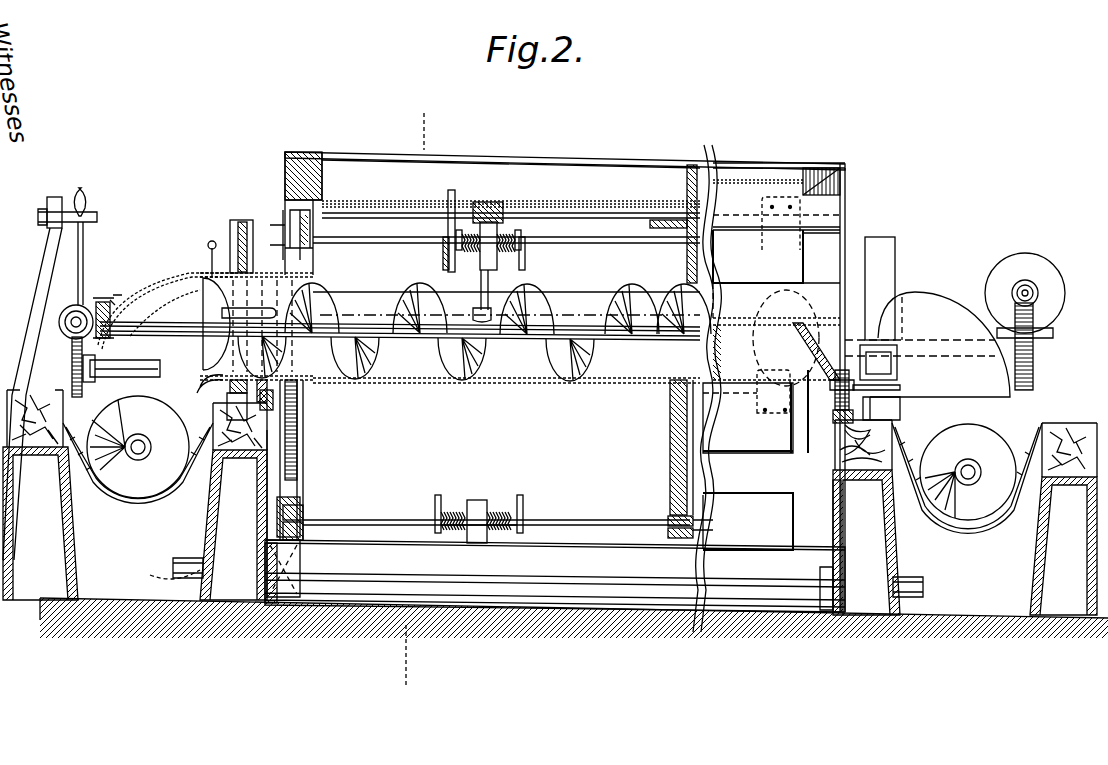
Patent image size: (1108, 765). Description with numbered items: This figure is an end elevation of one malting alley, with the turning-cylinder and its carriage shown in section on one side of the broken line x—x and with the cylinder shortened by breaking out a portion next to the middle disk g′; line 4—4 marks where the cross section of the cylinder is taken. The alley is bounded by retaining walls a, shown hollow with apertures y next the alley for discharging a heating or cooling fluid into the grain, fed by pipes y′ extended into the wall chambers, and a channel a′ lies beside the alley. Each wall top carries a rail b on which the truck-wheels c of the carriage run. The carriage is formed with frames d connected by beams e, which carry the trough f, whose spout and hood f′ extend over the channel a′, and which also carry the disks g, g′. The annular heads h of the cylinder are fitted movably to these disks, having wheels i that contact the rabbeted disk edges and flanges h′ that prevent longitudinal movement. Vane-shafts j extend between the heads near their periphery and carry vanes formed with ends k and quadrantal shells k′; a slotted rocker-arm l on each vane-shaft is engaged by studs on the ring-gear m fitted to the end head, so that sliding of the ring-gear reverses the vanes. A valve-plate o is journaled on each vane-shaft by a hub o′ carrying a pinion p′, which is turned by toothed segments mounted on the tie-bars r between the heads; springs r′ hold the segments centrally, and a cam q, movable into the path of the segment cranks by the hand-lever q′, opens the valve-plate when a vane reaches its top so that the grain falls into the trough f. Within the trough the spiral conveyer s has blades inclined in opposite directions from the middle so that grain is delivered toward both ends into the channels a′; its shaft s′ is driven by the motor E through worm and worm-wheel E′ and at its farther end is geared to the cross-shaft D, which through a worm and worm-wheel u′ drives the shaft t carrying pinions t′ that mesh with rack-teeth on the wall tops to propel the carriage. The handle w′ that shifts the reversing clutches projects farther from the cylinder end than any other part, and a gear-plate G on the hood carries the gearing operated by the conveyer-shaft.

The vane head k is at (317, 170).
The quadrantal shell k′ is at (572, 160).
The broken line x— x is at (706, 160).
The section line 4— 4 is at (413, 398).
The valve-plate o is at (374, 202).
The hub o′ is at (508, 196).
The vane-shaft j is at (600, 212).
The tie-bar r is at (358, 244).
The spring r′ is at (466, 505).
The pinion p′ is at (527, 240).
The cam q is at (480, 272).
The hand-lever q′ is at (207, 248).
The beam e is at (579, 276).
The trough f is at (520, 384).
The spout and hood f′ is at (162, 272).
The conveyer s is at (632, 294).
The conveyer-shaft s′ is at (168, 322).
The disk g is at (300, 462).
The middle disk g′ is at (760, 285).
The wheel i is at (305, 512).
The annular head h is at (318, 532).
The flange h′ is at (695, 520).
The ring-gear m is at (283, 484).
The slotted rocker-arm l is at (283, 250).
The retaining wall a is at (75, 520).
The channel a′ is at (141, 506).
The aperture y is at (253, 572).
The pipe y′ is at (173, 569).
The handle w′ is at (84, 247).
The cross-shaft D is at (59, 323).
The gear-plate G is at (108, 302).
The worm-wheel u′ is at (72, 360).
The pinion shaft t is at (838, 424).
The pinion t′ is at (857, 446).
The carriage frame d is at (240, 220).
The truck-wheel c is at (215, 386).
The rail b is at (888, 410).
The motor E is at (1026, 258).
The worm and worm-wheel E′ is at (1035, 310).